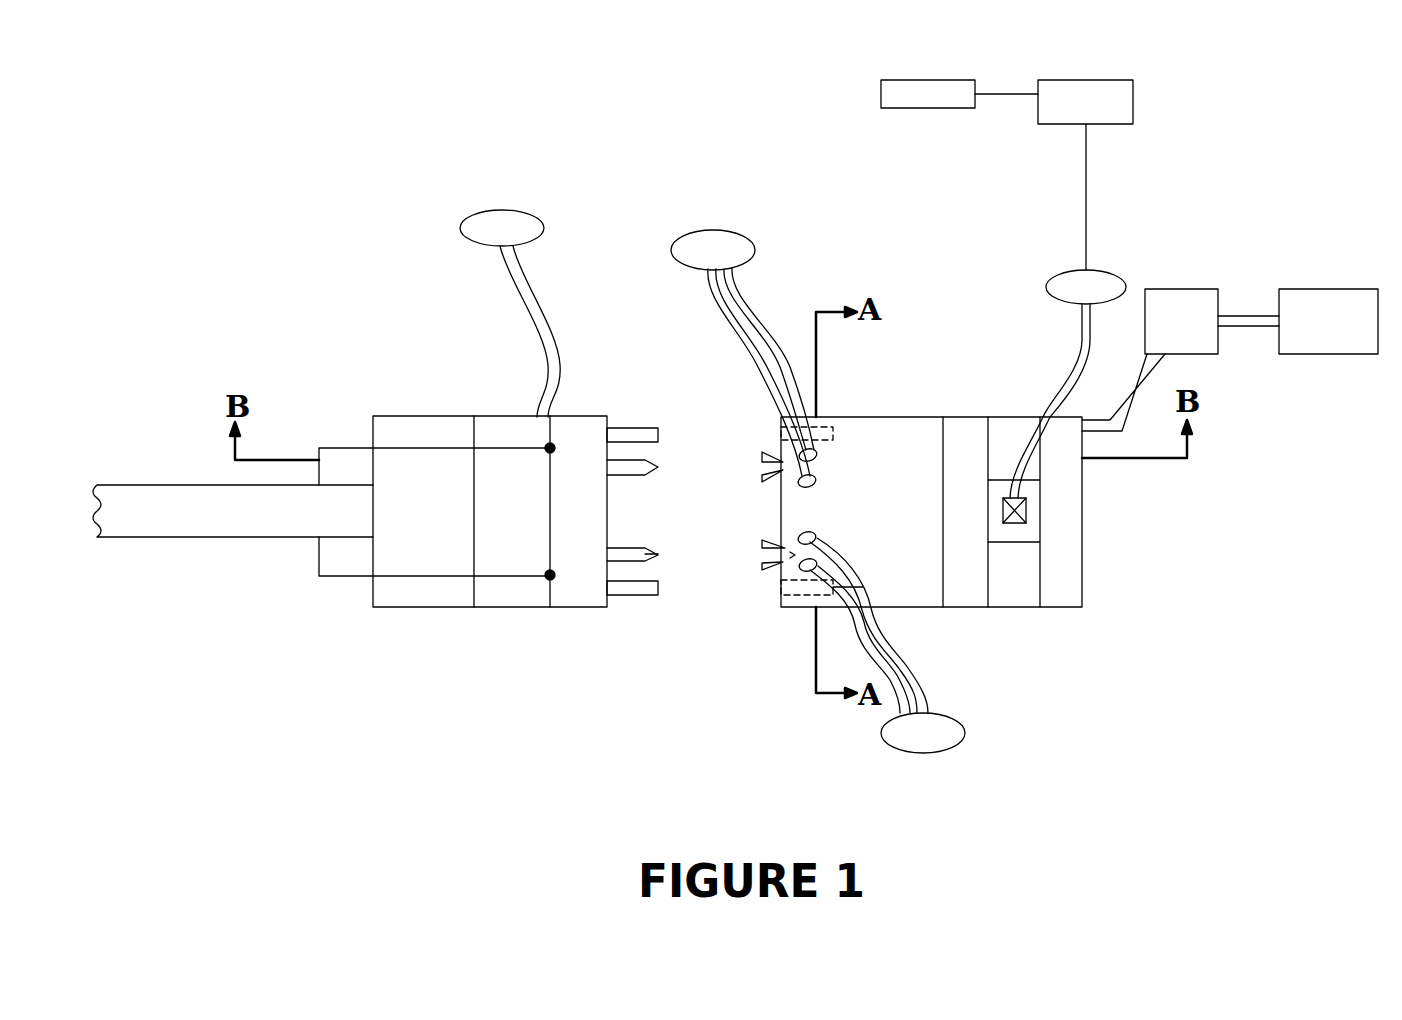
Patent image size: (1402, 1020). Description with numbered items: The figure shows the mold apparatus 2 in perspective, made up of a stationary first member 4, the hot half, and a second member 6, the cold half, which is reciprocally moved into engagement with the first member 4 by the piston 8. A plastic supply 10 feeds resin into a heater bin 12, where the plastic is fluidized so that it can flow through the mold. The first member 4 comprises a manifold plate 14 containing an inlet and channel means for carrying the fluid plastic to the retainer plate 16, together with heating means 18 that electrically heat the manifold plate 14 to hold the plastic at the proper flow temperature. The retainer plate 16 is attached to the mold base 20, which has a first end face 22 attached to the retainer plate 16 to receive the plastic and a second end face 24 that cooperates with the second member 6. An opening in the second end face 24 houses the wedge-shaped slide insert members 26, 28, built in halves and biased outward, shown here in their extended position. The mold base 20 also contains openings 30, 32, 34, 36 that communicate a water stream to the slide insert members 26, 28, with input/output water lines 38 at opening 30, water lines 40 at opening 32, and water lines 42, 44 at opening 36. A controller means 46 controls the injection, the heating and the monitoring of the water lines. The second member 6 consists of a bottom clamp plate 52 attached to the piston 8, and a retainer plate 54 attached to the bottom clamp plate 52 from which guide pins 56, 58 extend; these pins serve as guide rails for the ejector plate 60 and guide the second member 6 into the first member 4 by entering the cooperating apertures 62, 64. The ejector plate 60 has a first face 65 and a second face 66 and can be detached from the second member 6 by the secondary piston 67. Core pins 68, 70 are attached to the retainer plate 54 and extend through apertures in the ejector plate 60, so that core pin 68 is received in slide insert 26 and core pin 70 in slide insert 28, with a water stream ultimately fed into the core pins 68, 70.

The mold apparatus 2 is at (992, 172).
The first member 4 is at (903, 417).
The second member 6 is at (421, 416).
The piston 8 is at (205, 510).
The plastic supply 10 is at (1322, 316).
The heater bin 12 is at (1182, 305).
The manifold plate 14 is at (1017, 422).
The retainer plate 16 is at (962, 433).
The heating means 18 is at (1012, 530).
The mold base 20 is at (895, 447).
The first end face 22 is at (928, 527).
The second end face 24 is at (781, 508).
The slide insert member 26 is at (775, 458).
The slide insert member 28 is at (768, 567).
The opening 30 is at (817, 455).
The opening 32 is at (817, 483).
The opening 34 is at (817, 537).
The opening 36 is at (817, 563).
The input/output water lines 38 is at (750, 297).
The input/output water lines 40 is at (720, 305).
The input/output water lines 42 is at (893, 677).
The input/output water lines 44 is at (917, 657).
The controller means 46 is at (1080, 93).
The bottom clamp plate 52 is at (403, 557).
The retainer plate 54 is at (505, 490).
The guide pin 56 is at (633, 435).
The guide pin 58 is at (626, 583).
The ejector plate 60 is at (578, 545).
The aperture 62 is at (828, 427).
The aperture 64 is at (880, 607).
The first face 65 is at (608, 508).
The second face 66 is at (550, 515).
The secondary piston 67 is at (340, 448).
The core pin 68 is at (643, 467).
The core pin 70 is at (670, 560).